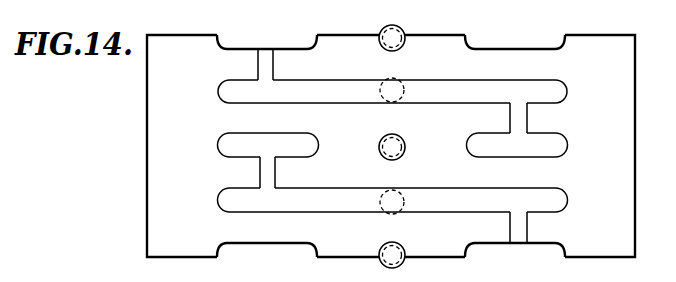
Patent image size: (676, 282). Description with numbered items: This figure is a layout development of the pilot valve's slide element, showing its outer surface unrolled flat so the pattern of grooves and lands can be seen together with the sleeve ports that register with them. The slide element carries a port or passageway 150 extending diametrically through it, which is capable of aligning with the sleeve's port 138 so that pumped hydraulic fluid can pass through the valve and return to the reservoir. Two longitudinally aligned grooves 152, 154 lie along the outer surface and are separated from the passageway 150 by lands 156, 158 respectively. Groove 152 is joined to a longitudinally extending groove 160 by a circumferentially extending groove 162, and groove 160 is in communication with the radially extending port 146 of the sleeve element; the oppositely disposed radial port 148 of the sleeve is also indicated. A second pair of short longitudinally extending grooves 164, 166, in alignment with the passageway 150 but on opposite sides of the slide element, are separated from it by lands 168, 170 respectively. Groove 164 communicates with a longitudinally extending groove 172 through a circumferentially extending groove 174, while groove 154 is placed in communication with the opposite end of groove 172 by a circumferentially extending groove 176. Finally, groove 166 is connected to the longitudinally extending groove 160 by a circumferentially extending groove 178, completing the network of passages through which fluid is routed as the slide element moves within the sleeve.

The port 138 is at (398, 33).
The radially extending port 146 is at (407, 88).
The radially extending port 148 is at (401, 212).
The port or passageway 150 is at (404, 45).
The groove 152 is at (313, 44).
The groove 154 is at (562, 44).
The land 156 is at (356, 35).
The land 158 is at (432, 36).
The longitudinally extending groove 160 is at (456, 80).
The circumferentially extending groove 162 is at (268, 66).
The short longitudinally extending groove 164 is at (228, 155).
The short longitudinally extending groove 166 is at (540, 154).
The land 168 is at (350, 153).
The land 170 is at (436, 153).
The longitudinally extending groove 172 is at (285, 208).
The circumferentially extending groove 174 is at (262, 174).
The circumferentially extending groove 176 is at (520, 228).
The circumferentially extending groove 178 is at (520, 118).